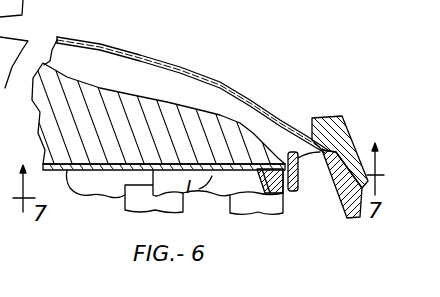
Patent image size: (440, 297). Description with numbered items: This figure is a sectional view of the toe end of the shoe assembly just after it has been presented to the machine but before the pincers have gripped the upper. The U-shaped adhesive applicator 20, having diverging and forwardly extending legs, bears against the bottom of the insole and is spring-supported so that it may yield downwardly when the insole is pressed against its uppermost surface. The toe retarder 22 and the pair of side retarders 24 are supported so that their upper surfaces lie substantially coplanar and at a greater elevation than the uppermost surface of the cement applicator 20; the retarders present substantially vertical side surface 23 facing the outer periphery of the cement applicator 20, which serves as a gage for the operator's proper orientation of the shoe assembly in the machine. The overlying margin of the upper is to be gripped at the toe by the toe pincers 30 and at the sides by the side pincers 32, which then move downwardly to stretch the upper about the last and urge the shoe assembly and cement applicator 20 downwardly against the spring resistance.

The adhesive applicator 20 is at (283, 193).
The toe retarder 22 is at (300, 178).
The side surface 23 is at (281, 150).
The side retarders 24 is at (216, 190).
The toe pincers 30 is at (334, 118).
The side pincers 32 is at (135, 203).